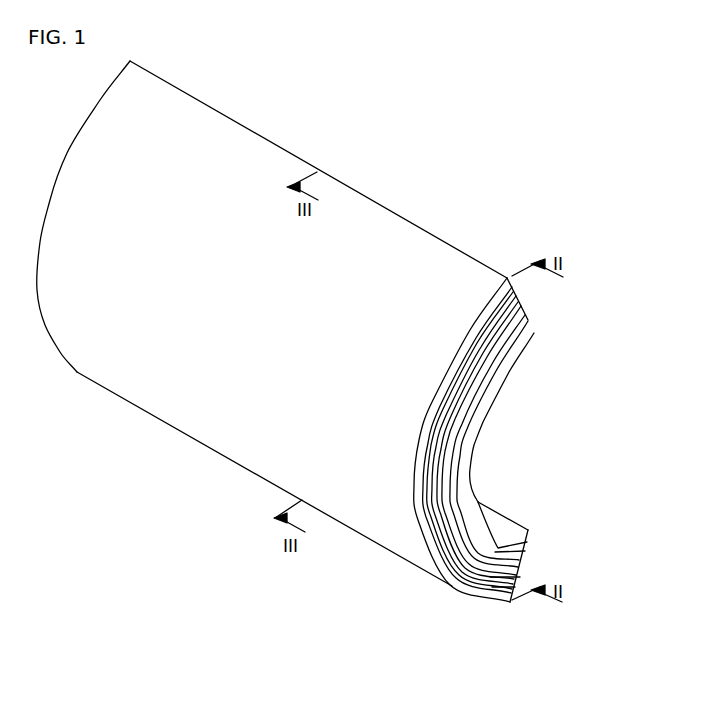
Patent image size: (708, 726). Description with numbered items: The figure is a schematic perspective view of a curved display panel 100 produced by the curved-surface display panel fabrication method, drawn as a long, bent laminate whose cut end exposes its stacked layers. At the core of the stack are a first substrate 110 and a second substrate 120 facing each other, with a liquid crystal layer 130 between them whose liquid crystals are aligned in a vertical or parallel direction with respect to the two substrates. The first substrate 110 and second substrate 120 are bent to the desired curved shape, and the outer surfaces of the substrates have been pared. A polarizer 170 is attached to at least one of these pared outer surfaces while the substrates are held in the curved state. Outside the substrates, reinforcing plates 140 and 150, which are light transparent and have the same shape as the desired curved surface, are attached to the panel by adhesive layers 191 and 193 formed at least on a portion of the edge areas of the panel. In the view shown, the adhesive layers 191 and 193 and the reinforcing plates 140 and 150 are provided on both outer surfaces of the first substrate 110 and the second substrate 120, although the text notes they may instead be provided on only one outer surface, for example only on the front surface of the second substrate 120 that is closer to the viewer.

The curved display panel 100 is at (70, 76).
The first substrate 110 is at (517, 550).
The second substrate 120 is at (507, 298).
The liquid crystal layer 130 is at (500, 320).
The reinforcing plate 140 is at (525, 535).
The reinforcing plate 150 is at (500, 595).
The polarizer 170 is at (460, 375).
The adhesive layer 191 is at (470, 422).
The adhesive layer 193 is at (443, 467).